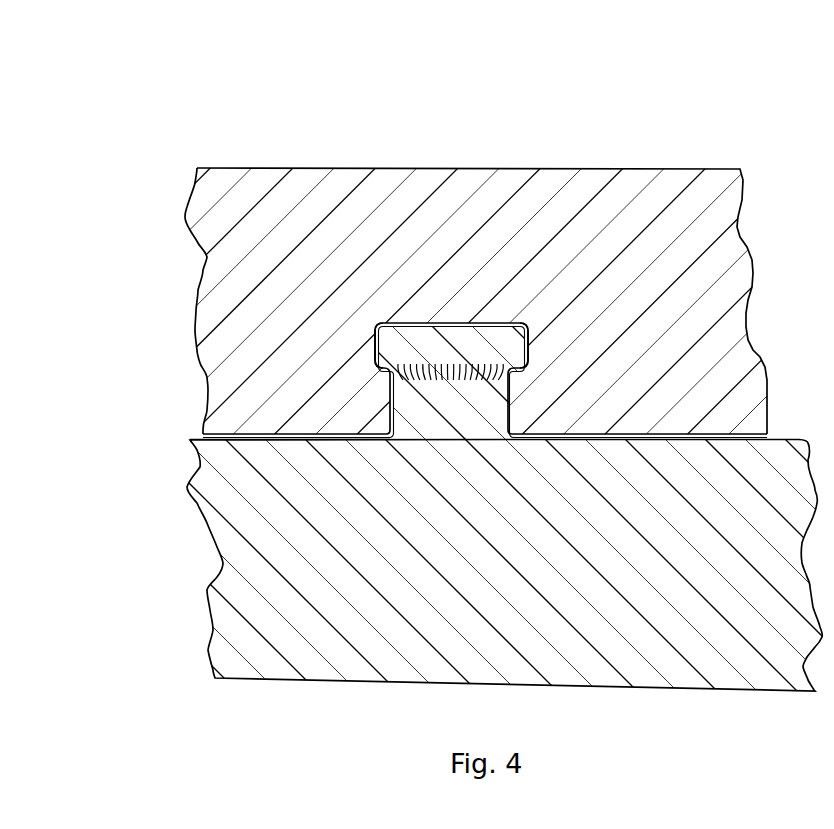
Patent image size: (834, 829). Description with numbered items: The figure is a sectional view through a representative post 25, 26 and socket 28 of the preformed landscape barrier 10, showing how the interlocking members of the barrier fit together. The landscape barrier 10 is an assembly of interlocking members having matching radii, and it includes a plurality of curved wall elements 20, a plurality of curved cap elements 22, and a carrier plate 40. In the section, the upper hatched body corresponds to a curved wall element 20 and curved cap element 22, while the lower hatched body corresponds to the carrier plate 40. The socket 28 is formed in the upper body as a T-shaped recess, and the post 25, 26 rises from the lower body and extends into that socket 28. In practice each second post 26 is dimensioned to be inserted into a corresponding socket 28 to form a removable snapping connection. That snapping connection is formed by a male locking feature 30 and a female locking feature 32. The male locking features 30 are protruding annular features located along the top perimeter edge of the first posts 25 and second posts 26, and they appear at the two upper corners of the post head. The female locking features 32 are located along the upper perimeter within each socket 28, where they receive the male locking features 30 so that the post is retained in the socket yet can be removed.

The landscape barrier 10 is at (88, 126).
The curved wall element 20 is at (417, 400).
The curved cap element 22 is at (504, 168).
The first post 25 is at (428, 323).
The second post 26 is at (485, 382).
The socket 28 is at (482, 322).
The male locking feature 30 is at (382, 342).
The female locking feature 32 is at (373, 348).
The carrier plate 40 is at (290, 650).